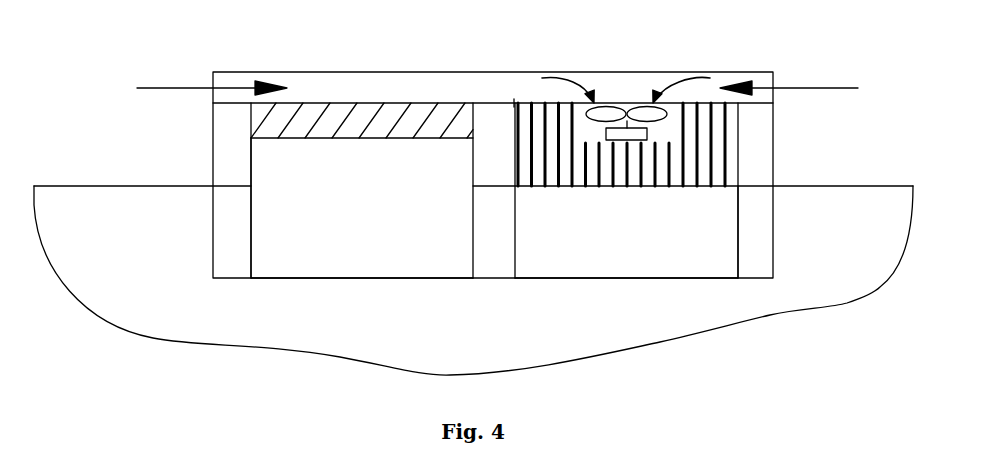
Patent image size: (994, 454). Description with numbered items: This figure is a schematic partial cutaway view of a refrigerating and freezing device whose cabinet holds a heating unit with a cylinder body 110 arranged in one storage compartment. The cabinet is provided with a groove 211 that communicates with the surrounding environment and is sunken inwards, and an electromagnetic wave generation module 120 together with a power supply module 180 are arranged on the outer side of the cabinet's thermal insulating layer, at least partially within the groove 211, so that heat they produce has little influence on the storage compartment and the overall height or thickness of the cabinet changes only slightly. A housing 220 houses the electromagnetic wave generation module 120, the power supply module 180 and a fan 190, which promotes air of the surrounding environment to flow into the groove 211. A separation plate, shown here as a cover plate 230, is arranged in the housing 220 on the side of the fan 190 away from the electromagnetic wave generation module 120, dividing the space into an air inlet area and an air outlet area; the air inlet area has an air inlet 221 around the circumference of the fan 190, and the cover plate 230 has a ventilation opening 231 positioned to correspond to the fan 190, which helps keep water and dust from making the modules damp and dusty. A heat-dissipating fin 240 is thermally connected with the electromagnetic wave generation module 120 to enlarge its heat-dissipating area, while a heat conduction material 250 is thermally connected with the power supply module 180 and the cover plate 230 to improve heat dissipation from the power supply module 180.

The cylinder body 110 is at (247, 310).
The electromagnetic wave generation module 120 is at (718, 258).
The power supply module 180 is at (268, 218).
The fan 190 is at (608, 113).
The groove 211 is at (500, 260).
The housing 220 is at (212, 137).
The air inlet 221 is at (210, 95).
The cover plate 230 is at (412, 103).
The ventilation opening 231 is at (514, 103).
The heat-dissipating fin 240 is at (730, 160).
The heat conduction material 250 is at (320, 112).